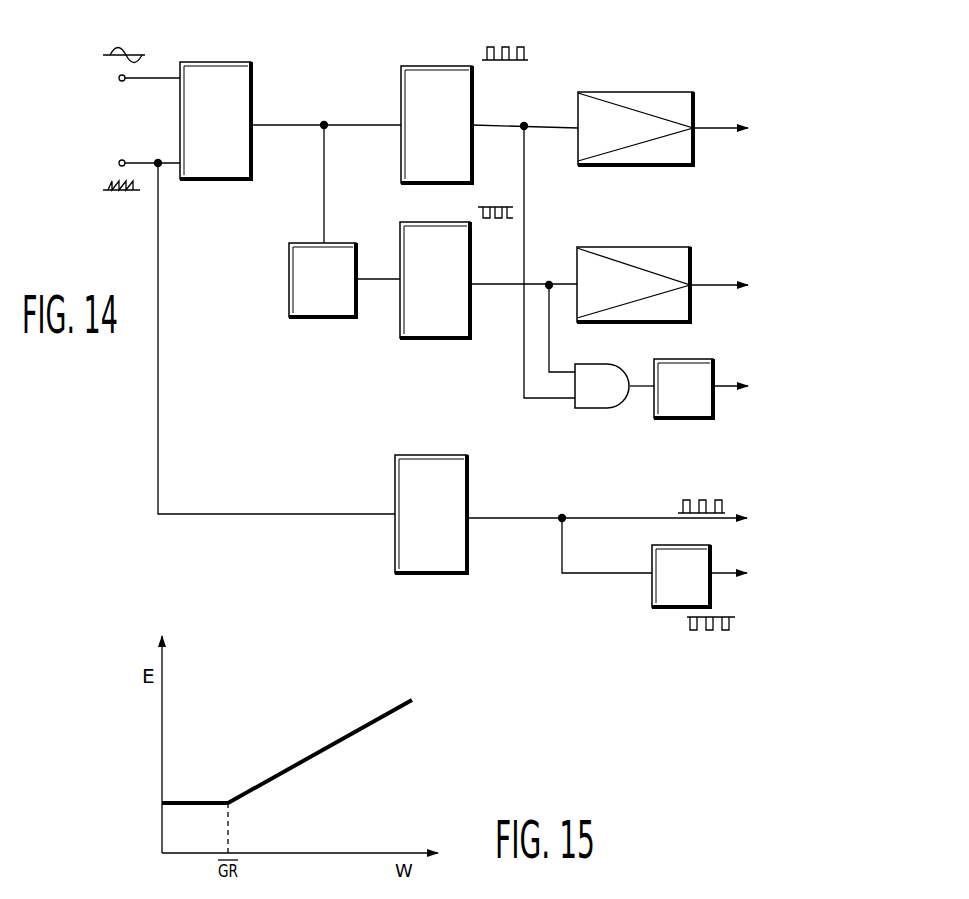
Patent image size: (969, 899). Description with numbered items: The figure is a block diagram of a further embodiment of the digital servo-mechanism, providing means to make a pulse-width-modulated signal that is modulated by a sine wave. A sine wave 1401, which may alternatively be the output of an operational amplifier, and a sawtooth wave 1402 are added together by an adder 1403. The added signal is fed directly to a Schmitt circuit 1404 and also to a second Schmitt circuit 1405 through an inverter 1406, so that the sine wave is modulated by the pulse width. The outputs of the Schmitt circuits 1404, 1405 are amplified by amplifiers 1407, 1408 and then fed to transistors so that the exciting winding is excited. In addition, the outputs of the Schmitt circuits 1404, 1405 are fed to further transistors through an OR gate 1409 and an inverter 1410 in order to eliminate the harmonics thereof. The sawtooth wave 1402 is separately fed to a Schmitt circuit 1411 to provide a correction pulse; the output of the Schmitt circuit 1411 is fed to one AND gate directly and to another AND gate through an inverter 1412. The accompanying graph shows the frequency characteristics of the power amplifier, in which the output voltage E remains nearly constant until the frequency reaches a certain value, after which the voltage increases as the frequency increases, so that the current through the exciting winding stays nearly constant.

The sine wave 1401 is at (141, 82).
The sawtooth wave 1402 is at (249, 318).
The adder 1403 is at (232, 62).
The Schmitt circuit 1404 is at (410, 66).
The Schmitt circuit 1405 is at (402, 340).
The inverter 1406 is at (310, 318).
The amplifier 1407 is at (614, 74).
The amplifier 1408 is at (614, 231).
The OR gate 1409 is at (589, 410).
The inverter 1410 is at (712, 347).
The Schmitt circuit 1411 is at (397, 465).
The inverter 1412 is at (650, 582).